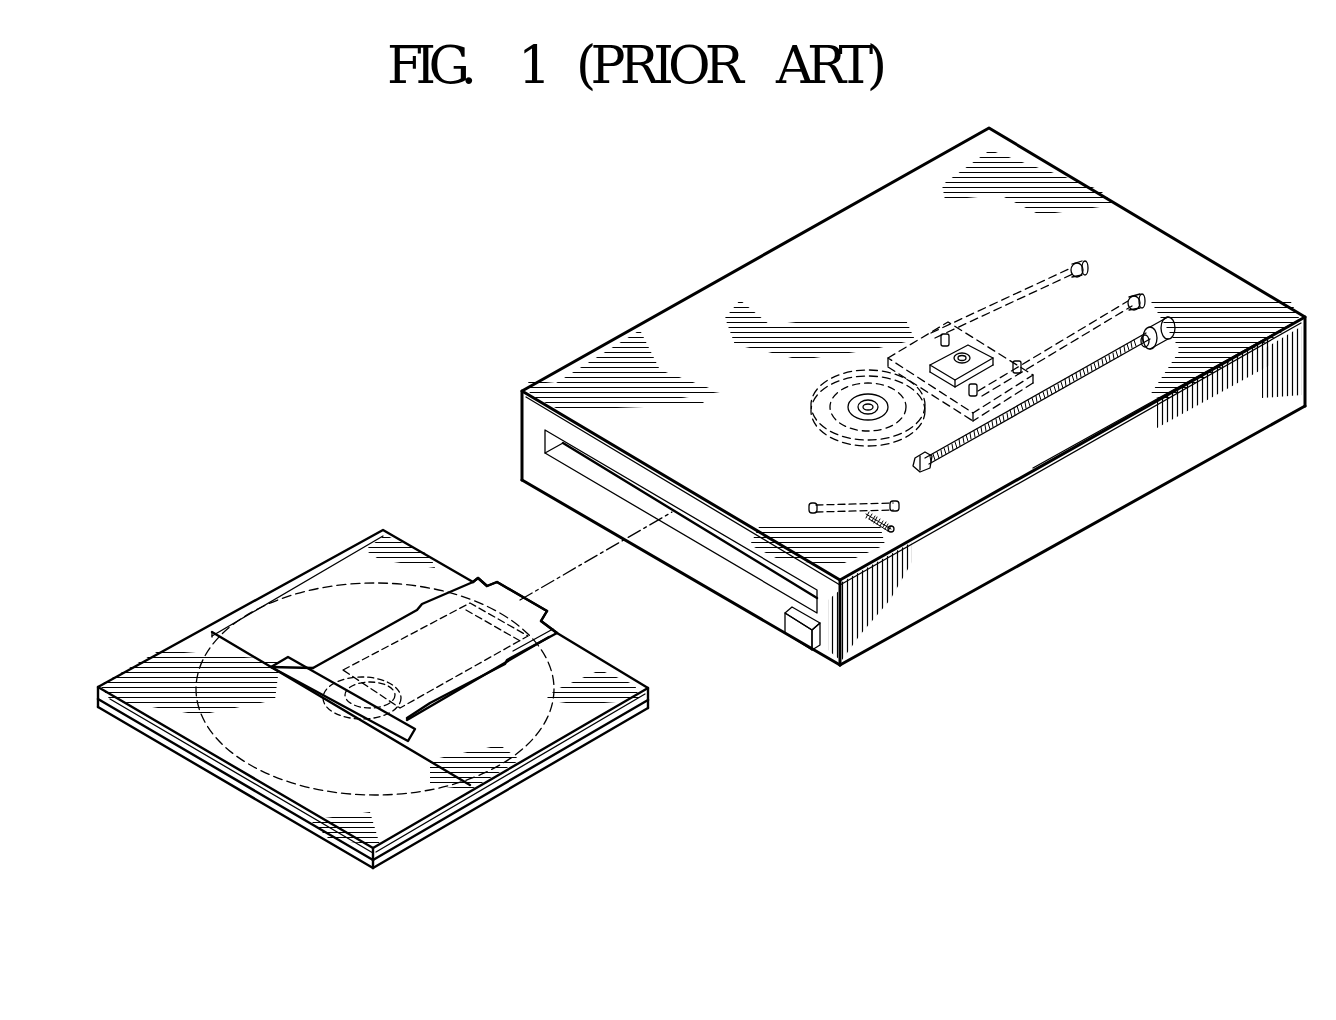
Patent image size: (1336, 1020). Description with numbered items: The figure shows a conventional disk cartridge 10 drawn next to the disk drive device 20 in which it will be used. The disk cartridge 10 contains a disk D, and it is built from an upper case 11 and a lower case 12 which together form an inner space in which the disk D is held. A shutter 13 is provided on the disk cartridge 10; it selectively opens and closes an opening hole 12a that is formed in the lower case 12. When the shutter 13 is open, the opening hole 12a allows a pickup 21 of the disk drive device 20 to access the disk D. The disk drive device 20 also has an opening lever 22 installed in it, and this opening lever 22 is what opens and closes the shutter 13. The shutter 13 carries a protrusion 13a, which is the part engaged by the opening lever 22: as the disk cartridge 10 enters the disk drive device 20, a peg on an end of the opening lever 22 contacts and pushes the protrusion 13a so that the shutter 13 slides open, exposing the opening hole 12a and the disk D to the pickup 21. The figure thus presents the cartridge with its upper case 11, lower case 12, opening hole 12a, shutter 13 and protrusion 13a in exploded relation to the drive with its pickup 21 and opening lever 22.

The disk cartridge 10 is at (205, 806).
The upper case 11 is at (640, 708).
The lower case 12 is at (592, 742).
The opening hole 12a is at (456, 630).
The shutter 13 is at (508, 596).
The protrusion 13a is at (563, 622).
The disk drive device 20 is at (678, 283).
The pickup 21 is at (962, 354).
The opening lever 22 is at (840, 500).
The disk D is at (331, 590).